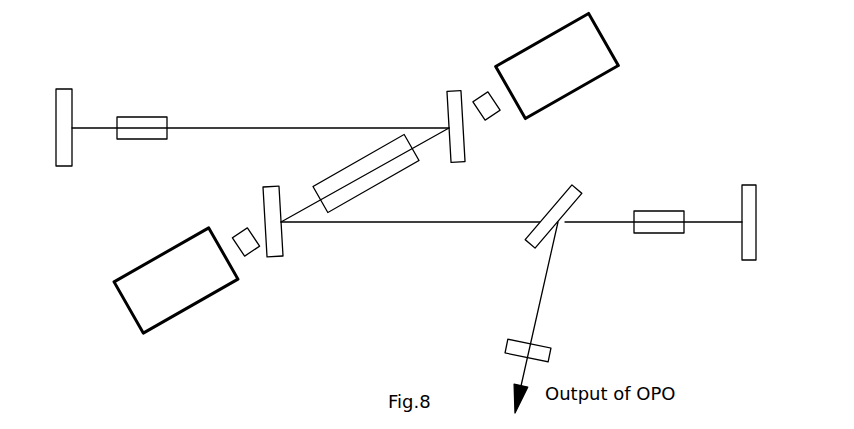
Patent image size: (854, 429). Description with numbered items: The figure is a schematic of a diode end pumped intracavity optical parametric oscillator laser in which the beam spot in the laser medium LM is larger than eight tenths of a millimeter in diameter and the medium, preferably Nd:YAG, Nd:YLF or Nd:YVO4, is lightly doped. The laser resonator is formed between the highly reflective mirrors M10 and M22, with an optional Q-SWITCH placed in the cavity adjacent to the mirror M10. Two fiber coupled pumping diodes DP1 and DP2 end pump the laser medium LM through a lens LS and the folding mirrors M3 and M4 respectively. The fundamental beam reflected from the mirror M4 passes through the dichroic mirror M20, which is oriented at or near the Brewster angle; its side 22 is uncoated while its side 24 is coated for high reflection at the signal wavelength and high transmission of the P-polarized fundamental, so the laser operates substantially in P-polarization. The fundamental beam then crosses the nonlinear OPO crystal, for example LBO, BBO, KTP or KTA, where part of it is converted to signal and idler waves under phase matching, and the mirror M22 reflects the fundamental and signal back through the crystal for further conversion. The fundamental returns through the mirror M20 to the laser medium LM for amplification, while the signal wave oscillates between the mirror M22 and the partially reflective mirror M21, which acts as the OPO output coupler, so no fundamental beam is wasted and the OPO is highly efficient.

The reflecting mirror M10 is at (72, 115).
The Q-switch Q-SWITCH is at (156, 114).
The mirror M3 is at (456, 114).
The lens LS is at (367, 174).
The pumping diode DP1 is at (571, 65).
The laser medium LM is at (366, 173).
The mirror M4 is at (270, 209).
The pumping diode DP2 is at (165, 280).
The side of mirror M20 22 is at (410, 210).
The side of mirror M20 24 is at (653, 210).
The dichroic mirror M20 is at (570, 207).
The nonlinear OPO crystal OPO is at (649, 250).
The mirror M22 is at (750, 211).
The output coupler mirror M21 is at (545, 317).